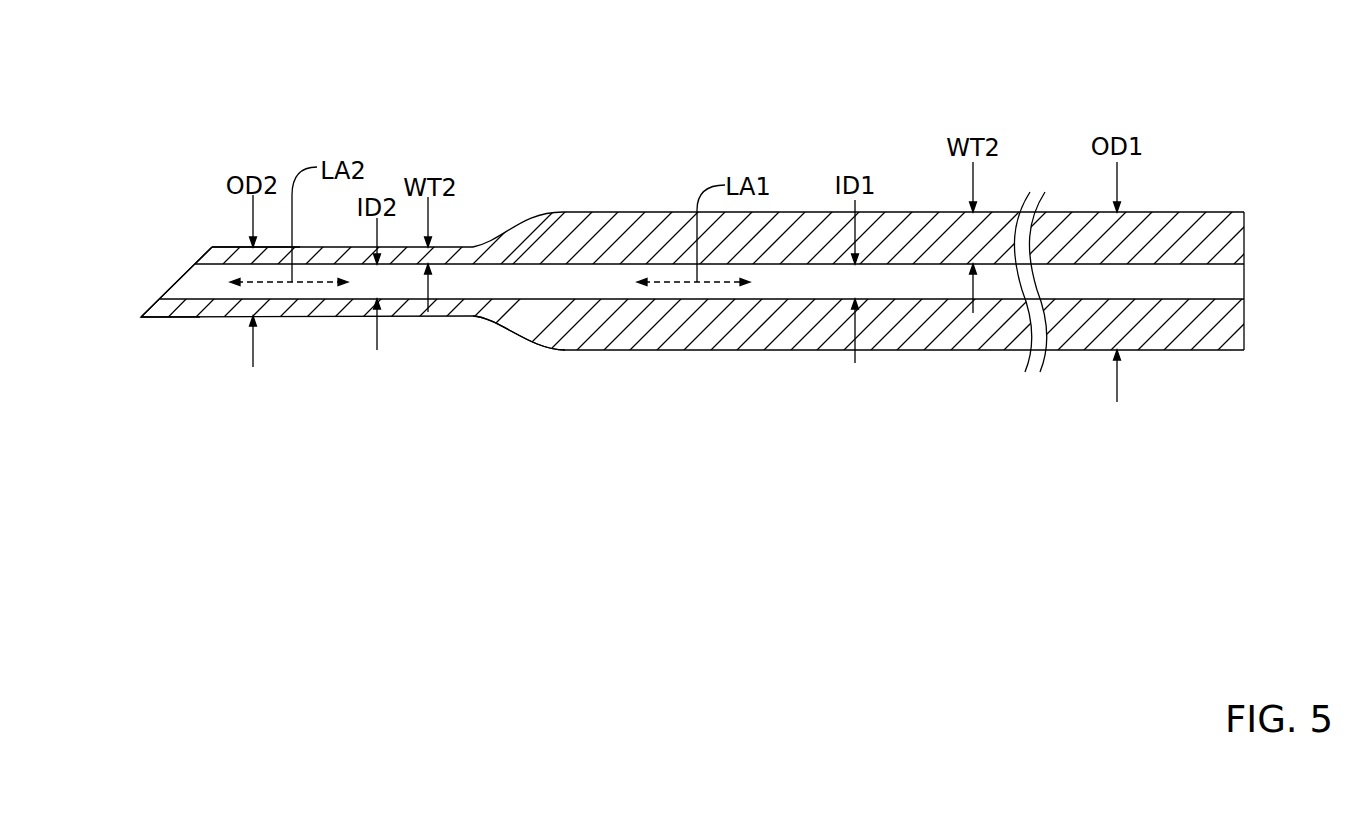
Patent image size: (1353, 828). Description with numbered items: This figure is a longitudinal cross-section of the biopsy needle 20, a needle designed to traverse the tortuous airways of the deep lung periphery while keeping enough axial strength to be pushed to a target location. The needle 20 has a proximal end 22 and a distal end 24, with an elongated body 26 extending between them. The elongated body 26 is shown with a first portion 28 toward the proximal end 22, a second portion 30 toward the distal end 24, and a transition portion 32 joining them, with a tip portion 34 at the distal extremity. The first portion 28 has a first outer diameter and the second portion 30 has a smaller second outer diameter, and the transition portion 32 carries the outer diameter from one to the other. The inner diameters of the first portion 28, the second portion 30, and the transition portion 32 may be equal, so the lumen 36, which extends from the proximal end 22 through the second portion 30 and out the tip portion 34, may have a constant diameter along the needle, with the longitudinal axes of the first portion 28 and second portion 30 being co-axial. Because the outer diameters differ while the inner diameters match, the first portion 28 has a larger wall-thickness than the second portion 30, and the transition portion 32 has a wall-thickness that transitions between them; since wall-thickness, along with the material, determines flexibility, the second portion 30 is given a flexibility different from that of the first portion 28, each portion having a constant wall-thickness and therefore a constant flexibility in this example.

The needle 20 is at (698, 233).
The proximal end 22 is at (1244, 312).
The distal end 24 is at (141, 317).
The elongated body 26 is at (558, 350).
The first portion 28 is at (570, 367).
The second portion 30 is at (470, 367).
The transition portion 32 is at (570, 193).
The tip portion 34 is at (210, 193).
The lumen 36 is at (1160, 281).